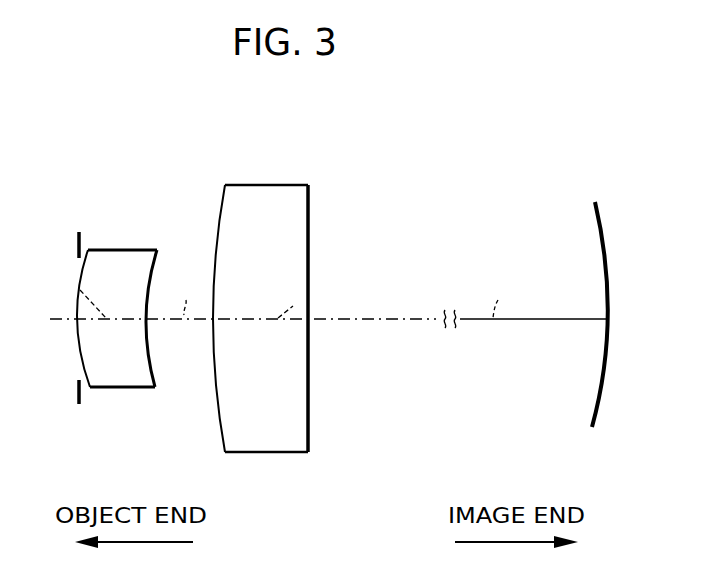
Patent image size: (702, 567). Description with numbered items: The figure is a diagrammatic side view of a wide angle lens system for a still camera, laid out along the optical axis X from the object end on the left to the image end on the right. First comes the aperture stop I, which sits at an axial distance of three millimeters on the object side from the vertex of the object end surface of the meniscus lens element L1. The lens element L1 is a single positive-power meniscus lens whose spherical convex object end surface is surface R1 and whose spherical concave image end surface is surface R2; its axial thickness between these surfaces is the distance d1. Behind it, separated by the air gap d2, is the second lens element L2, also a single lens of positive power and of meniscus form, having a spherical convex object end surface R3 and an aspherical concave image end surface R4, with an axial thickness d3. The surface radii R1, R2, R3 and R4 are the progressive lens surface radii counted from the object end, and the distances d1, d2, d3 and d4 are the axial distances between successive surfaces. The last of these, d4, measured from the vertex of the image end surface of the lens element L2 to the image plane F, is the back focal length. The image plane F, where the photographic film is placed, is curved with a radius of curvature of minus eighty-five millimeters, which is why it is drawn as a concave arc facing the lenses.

The first meniscus lens element L1 is at (108, 315).
The second lens element L2 is at (276, 316).
The aperture stop I is at (77, 242).
The image plane F is at (593, 222).
The optical axis X is at (547, 321).
The lens surface radius R1 is at (82, 349).
The lens surface radius R2 is at (153, 370).
The lens surface radius R3 is at (221, 423).
The lens surface radius R4 is at (308, 412).
The axial distance d1 is at (79, 299).
The axial distance d2 is at (184, 297).
The axial distance d3 is at (310, 308).
The back focal length d4 is at (497, 299).